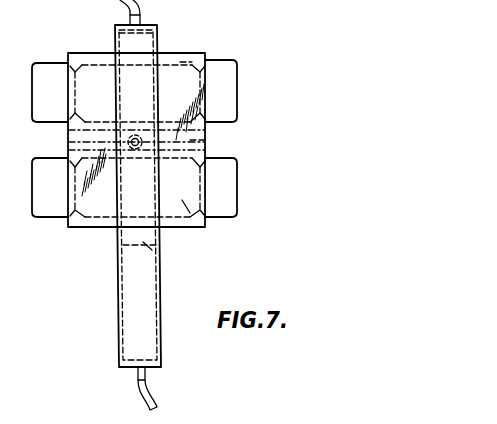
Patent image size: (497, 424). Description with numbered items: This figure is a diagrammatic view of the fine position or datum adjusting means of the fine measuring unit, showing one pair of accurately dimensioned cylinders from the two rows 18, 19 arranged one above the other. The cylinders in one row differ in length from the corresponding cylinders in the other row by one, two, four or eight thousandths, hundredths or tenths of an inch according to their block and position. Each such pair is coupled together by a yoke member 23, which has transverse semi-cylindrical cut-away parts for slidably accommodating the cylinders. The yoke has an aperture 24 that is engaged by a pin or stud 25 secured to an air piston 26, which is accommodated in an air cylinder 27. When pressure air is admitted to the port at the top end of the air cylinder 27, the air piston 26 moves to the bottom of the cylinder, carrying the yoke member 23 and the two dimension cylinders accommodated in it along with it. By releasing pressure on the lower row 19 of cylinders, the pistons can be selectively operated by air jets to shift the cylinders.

The row of cylinders 18 is at (85, 95).
The row of lower cylinders 19 is at (180, 204).
The yoke member 23 is at (192, 56).
The aperture 24 is at (207, 140).
The pin or stud 25 is at (68, 142).
The air piston 26 is at (158, 253).
The air cylinder 27 is at (161, 321).